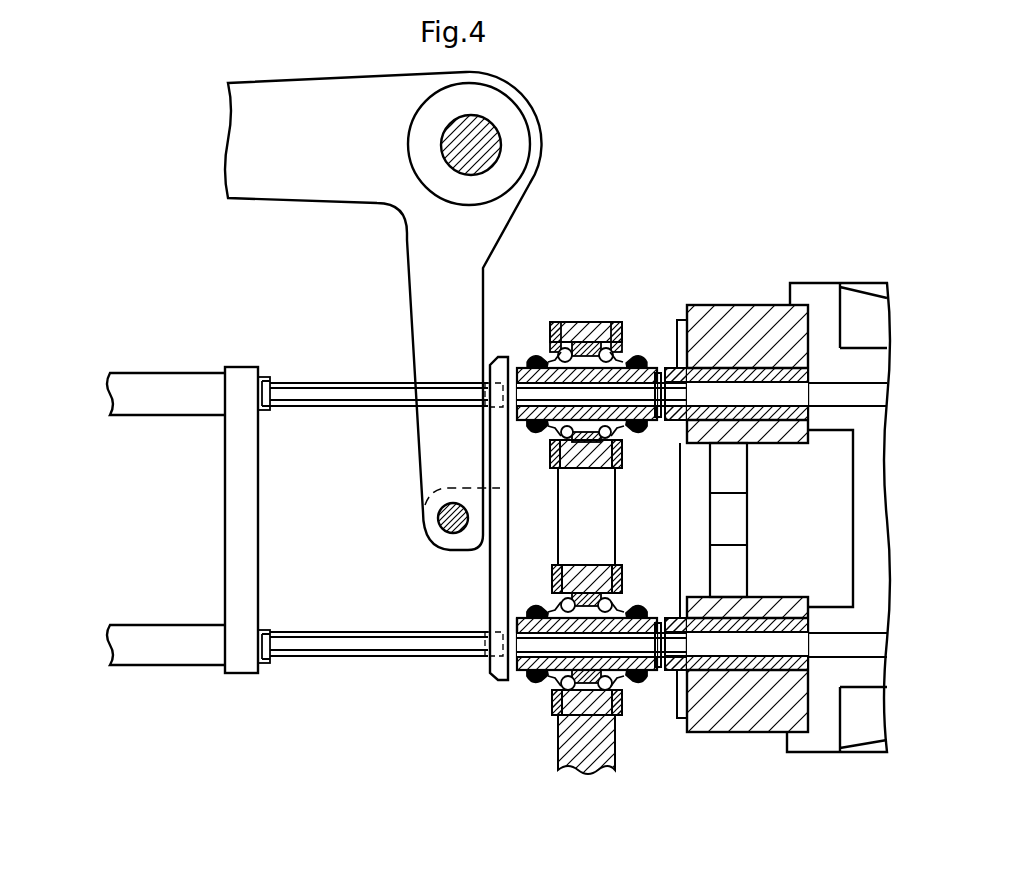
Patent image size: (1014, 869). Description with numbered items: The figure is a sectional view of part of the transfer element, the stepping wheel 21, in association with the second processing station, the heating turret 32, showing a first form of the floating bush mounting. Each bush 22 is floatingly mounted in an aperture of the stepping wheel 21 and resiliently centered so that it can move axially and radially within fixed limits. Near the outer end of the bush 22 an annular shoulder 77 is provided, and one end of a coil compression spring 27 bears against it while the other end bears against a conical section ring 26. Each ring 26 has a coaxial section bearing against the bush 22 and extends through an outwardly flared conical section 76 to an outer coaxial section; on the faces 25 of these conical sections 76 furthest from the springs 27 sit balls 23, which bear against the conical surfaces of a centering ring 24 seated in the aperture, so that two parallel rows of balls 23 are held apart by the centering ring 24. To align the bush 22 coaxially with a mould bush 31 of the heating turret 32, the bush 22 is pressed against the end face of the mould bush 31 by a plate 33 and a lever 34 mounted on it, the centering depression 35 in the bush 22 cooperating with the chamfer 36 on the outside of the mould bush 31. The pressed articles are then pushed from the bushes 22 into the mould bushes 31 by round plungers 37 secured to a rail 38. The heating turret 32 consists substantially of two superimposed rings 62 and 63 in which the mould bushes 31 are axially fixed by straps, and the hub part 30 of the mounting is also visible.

The stepping wheel 21 is at (558, 760).
The bush 22 is at (518, 672).
The balls 23 is at (562, 322).
The centering ring 24 is at (585, 322).
The faces 25 is at (622, 338).
The conical section ring 26 is at (547, 348).
The coil compression spring 27 is at (535, 690).
The hub face 30 is at (518, 618).
The mould bush 31 is at (672, 422).
The heating turret 32 is at (832, 283).
The plate 33 is at (493, 668).
The lever 34 is at (420, 287).
The centering depression 35 is at (660, 368).
The chamfer 36 is at (673, 620).
The round plunger 37 is at (327, 398).
The rail 38 is at (236, 521).
The ring 62 is at (737, 318).
The ring 63 is at (738, 725).
The conical section 76 is at (566, 452).
The annular shoulder 77 is at (540, 435).